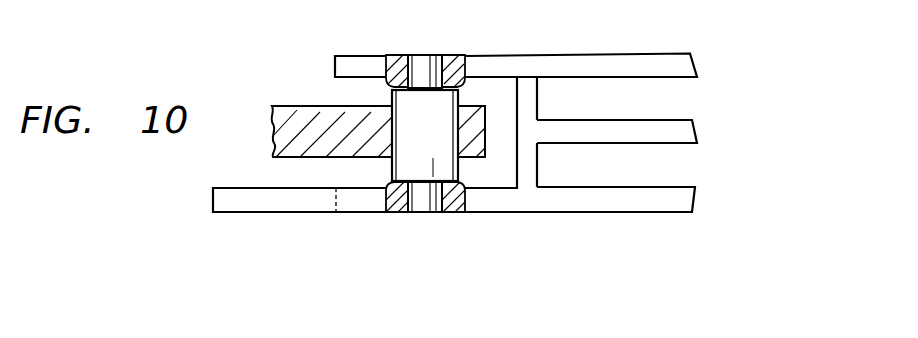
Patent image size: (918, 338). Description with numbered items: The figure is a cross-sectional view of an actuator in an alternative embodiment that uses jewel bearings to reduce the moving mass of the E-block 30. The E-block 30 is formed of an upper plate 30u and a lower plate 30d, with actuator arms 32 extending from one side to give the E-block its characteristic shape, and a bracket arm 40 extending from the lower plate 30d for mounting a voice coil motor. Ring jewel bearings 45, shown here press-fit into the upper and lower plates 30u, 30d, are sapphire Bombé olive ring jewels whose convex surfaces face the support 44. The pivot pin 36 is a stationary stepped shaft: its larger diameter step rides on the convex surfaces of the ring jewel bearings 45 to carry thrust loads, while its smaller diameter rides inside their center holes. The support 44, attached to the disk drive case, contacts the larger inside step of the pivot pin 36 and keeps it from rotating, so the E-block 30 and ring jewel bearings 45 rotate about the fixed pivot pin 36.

The upper plate 30u is at (348, 55).
The E-block 30 is at (605, 115).
The lower plate 30d is at (357, 214).
The actuator arms 32 is at (697, 61).
The bracket arms 40 is at (243, 189).
The support 44 is at (300, 106).
The pivot pin 36 is at (445, 148).
The ring jewel bearings 45 is at (456, 62).